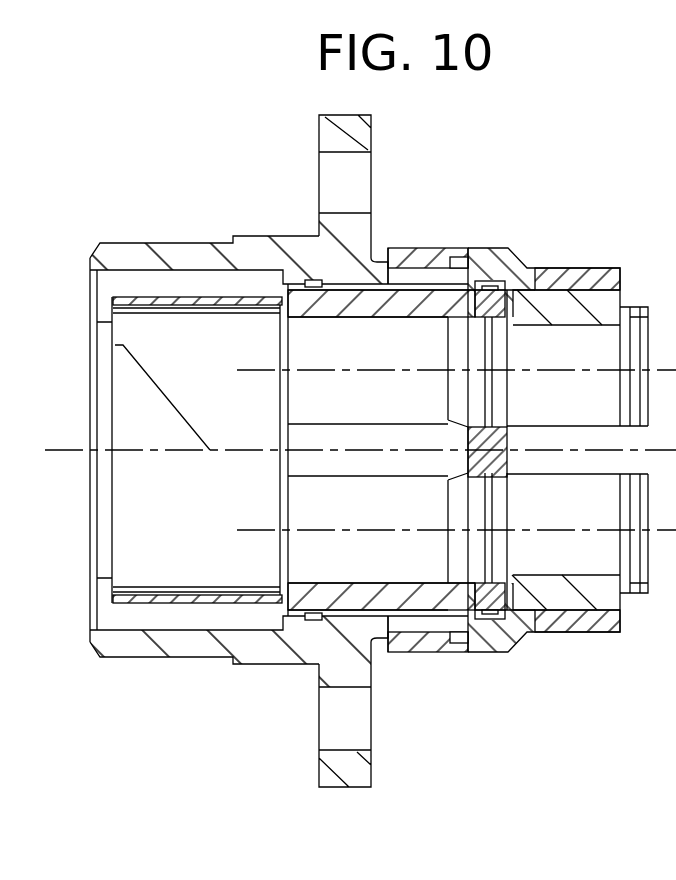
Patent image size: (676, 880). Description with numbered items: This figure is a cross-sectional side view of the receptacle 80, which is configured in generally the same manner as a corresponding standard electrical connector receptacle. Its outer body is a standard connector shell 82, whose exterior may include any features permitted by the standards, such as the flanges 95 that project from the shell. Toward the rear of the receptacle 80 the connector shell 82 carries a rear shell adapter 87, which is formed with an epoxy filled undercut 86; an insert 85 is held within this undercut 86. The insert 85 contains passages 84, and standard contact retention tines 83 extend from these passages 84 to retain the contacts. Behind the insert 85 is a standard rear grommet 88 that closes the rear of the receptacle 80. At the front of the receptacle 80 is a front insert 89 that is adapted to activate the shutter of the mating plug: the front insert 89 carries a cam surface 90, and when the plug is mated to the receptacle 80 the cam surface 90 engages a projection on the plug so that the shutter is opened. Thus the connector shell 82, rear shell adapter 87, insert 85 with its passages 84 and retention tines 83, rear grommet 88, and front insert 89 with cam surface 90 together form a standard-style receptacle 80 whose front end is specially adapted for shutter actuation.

The receptacle 80 is at (611, 150).
The connector shell 82 is at (250, 224).
The contact retention tines 83 is at (463, 320).
The passages 84 is at (588, 306).
The insert 85 is at (492, 625).
The epoxy filled undercut 86 is at (504, 264).
The rear shell adapter 87 is at (490, 258).
The rear grommet 88 is at (380, 597).
The front insert 89 is at (280, 597).
The cam surface 90 is at (172, 428).
The flanges 95 is at (352, 777).